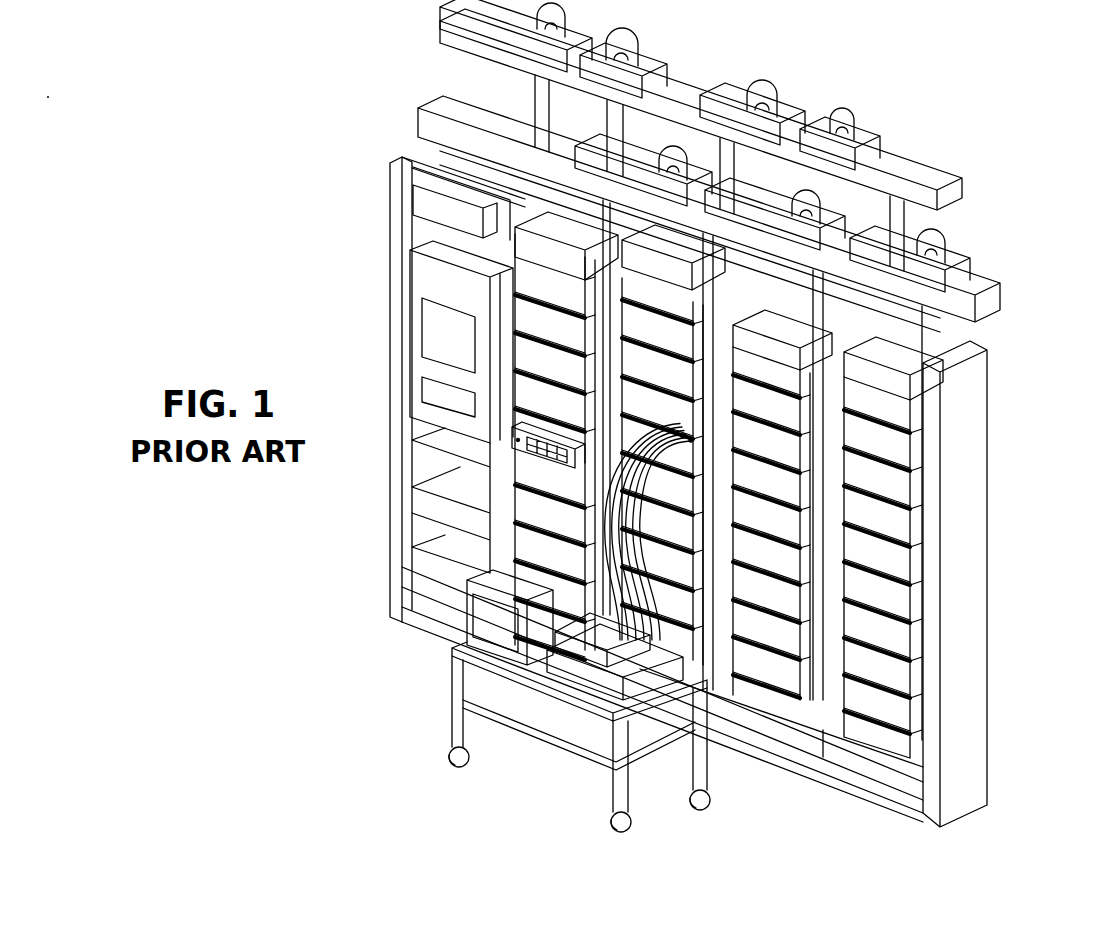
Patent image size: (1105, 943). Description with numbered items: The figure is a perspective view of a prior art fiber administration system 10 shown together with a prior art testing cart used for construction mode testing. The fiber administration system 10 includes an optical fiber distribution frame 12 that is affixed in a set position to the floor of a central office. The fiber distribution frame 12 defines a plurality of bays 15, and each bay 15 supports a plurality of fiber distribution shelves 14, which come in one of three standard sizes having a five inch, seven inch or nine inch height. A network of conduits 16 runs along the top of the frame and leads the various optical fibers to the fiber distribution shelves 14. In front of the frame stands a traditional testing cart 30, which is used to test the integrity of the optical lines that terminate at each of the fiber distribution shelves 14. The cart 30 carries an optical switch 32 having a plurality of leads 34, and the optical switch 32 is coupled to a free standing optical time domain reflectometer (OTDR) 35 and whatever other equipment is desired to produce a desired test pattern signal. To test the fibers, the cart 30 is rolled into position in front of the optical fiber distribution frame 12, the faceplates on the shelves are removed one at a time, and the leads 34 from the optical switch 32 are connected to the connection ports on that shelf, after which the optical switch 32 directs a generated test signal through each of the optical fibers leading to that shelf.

The fiber administration system 10 is at (1018, 160).
The optical fiber distribution frame 12 is at (975, 381).
The fiber distribution shelves 14 is at (897, 572).
The bays 15 is at (977, 297).
The network of conduits 16 is at (445, 106).
The testing cart 30 is at (452, 684).
The optical switch 32 is at (610, 681).
The leads 34 is at (668, 510).
The optical time domain reflectometer (OTDR) 35 is at (577, 643).